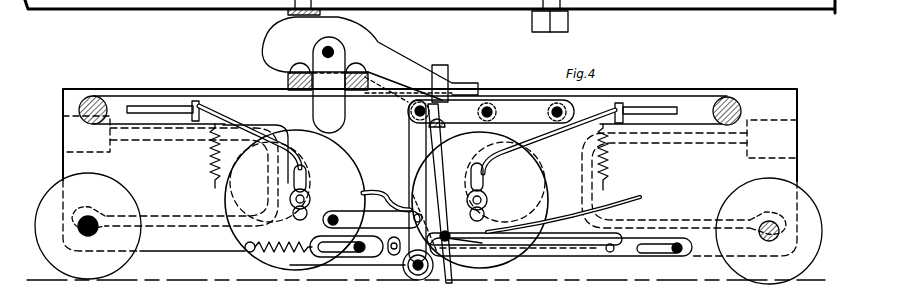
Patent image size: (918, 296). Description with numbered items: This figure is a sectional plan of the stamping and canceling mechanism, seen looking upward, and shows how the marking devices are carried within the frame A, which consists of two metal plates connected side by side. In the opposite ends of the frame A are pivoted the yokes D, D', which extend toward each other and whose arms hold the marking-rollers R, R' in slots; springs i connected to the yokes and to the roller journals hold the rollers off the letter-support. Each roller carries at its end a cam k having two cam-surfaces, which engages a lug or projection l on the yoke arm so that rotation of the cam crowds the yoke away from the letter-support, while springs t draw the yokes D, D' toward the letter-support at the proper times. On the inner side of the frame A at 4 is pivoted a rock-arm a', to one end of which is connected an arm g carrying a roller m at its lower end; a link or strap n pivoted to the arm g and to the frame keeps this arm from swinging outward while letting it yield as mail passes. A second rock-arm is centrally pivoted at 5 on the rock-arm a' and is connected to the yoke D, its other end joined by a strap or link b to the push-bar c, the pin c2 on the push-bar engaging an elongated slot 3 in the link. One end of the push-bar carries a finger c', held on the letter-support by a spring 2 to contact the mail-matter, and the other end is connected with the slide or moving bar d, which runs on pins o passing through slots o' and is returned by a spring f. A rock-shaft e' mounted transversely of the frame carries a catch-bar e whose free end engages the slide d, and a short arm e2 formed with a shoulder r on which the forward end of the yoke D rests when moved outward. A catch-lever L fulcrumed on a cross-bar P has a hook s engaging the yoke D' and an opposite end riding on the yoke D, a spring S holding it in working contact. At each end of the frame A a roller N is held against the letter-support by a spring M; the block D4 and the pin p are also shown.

The spring M is at (429, 181).
The roller N is at (428, 228).
The yoke D' is at (410, 132).
The yoke D is at (580, 137).
The block D4 is at (264, 154).
The spring t is at (404, 157).
The marking-roller R' is at (295, 200).
The marking-roller R is at (480, 200).
The lug or projection l is at (300, 180).
The cam k is at (289, 201).
The spring S is at (370, 59).
The catch-lever L is at (405, 78).
The short arm e2 is at (449, 78).
The hook s is at (329, 85).
The cross-bar P is at (322, 51).
The rock-arm a' is at (491, 111).
The shoulder r is at (437, 111).
The pivot 5 is at (490, 108).
The pivot 4 is at (560, 108).
The rock-shaft e' is at (443, 129).
The arm g is at (417, 181).
The roller m is at (404, 268).
The strap or link b is at (440, 193).
The elongated slot 3 is at (443, 227).
The pin c2 is at (464, 245).
The catch-bar e is at (386, 183).
The link or strap n is at (371, 219).
The slot o' is at (494, 258).
The pin o is at (520, 259).
The spring f is at (283, 238).
The pin p is at (243, 246).
The push-bar c is at (524, 235).
The spring 2 is at (563, 214).
The slide or moving bar d is at (543, 256).
The finger c' is at (440, 238).
The spring i is at (256, 160).
The frame A is at (675, 177).